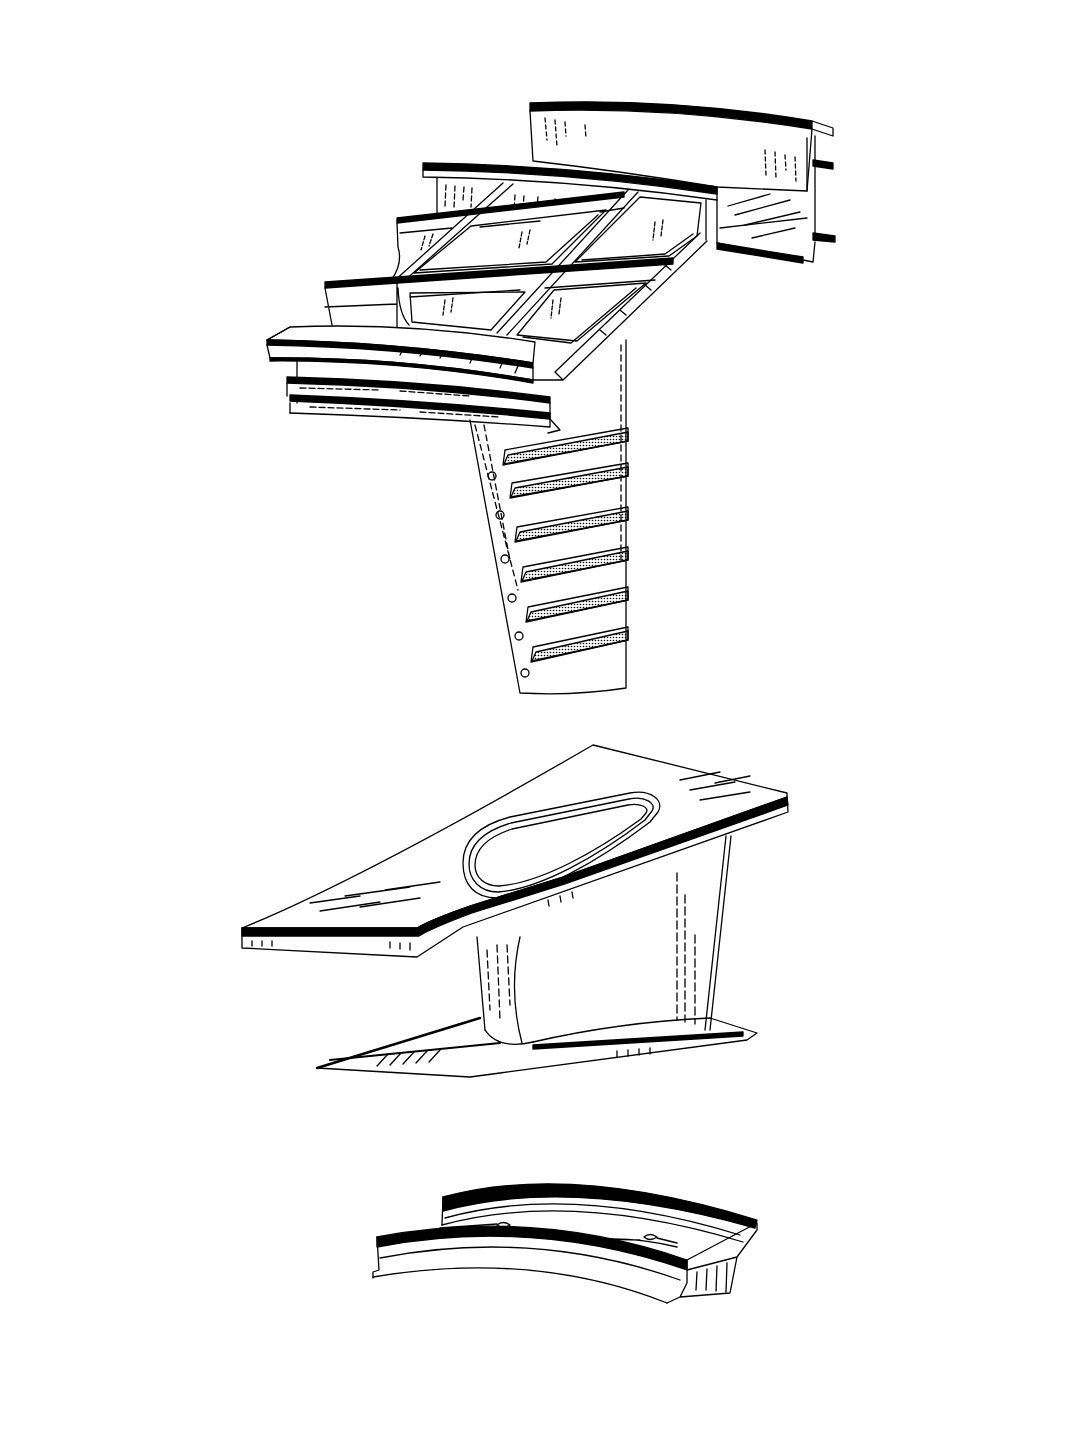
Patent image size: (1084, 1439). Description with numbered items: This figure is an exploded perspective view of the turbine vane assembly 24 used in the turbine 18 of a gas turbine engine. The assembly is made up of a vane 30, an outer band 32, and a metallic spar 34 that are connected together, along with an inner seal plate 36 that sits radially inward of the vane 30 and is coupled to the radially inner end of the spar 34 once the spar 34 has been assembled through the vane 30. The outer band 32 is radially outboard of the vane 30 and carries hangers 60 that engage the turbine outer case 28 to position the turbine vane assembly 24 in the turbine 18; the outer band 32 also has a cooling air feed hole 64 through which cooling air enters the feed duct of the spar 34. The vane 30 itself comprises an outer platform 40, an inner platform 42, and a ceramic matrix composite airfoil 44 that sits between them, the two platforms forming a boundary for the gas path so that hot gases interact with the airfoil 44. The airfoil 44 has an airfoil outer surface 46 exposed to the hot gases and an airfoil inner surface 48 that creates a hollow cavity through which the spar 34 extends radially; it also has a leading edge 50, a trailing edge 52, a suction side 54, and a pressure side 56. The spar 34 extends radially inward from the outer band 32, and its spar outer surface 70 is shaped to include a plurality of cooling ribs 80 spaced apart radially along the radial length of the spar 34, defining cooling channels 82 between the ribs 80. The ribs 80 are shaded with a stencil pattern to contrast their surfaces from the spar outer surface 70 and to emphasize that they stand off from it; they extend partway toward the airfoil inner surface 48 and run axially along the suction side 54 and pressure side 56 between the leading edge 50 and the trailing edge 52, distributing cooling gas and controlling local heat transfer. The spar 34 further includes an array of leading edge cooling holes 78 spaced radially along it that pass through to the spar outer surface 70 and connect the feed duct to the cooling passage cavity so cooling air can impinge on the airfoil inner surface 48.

The turbine 18 is at (183, 126).
The turbine vane assembly 24 is at (141, 155).
The turbine outer case 28 is at (318, 173).
The vane 30 is at (790, 786).
The outer band 32 is at (816, 120).
The metallic spar 34 is at (630, 343).
The inner seal plate 36 is at (760, 1212).
The outer platform 40 is at (775, 820).
The inner platform 42 is at (738, 1024).
The ceramic matrix composite airfoil 44 is at (734, 892).
The airfoil outer surface 46 is at (710, 917).
The airfoil inner surface 48 is at (627, 800).
The leading edge 50 is at (506, 1034).
The trailing edge 52 is at (715, 958).
The suction side 54 is at (478, 981).
The pressure side 56 is at (638, 1011).
The hangers 60 is at (595, 102).
The cooling air feed hole 64 is at (505, 282).
The spar outer surface 70 is at (602, 408).
The leading edge cooling holes 78 is at (500, 557).
The cooling ribs 80 is at (624, 558).
The cooling channels 82 is at (617, 492).